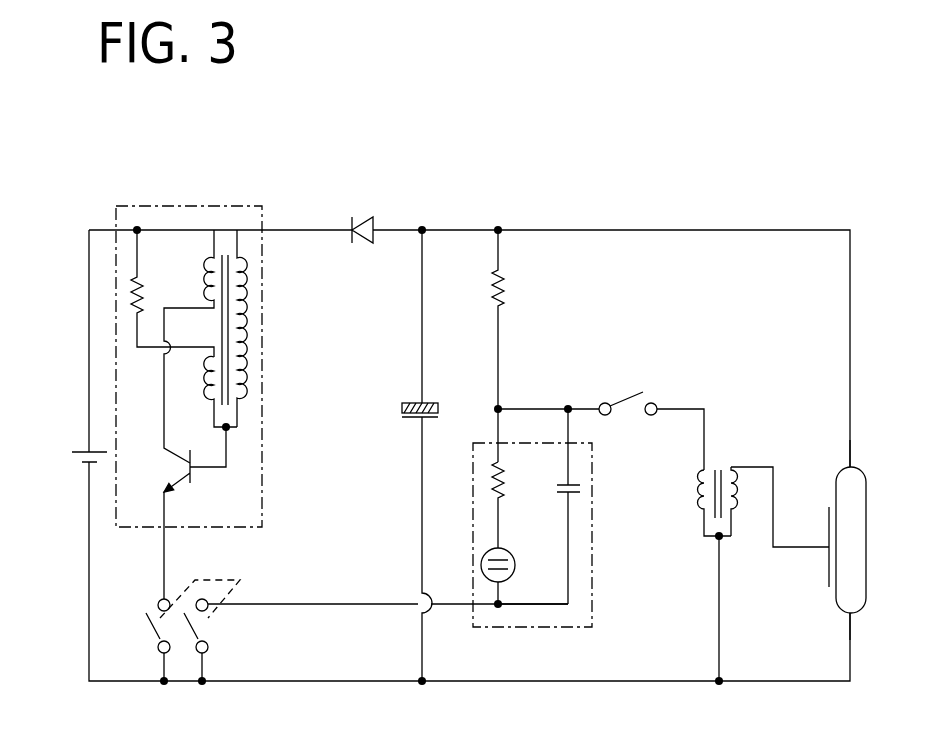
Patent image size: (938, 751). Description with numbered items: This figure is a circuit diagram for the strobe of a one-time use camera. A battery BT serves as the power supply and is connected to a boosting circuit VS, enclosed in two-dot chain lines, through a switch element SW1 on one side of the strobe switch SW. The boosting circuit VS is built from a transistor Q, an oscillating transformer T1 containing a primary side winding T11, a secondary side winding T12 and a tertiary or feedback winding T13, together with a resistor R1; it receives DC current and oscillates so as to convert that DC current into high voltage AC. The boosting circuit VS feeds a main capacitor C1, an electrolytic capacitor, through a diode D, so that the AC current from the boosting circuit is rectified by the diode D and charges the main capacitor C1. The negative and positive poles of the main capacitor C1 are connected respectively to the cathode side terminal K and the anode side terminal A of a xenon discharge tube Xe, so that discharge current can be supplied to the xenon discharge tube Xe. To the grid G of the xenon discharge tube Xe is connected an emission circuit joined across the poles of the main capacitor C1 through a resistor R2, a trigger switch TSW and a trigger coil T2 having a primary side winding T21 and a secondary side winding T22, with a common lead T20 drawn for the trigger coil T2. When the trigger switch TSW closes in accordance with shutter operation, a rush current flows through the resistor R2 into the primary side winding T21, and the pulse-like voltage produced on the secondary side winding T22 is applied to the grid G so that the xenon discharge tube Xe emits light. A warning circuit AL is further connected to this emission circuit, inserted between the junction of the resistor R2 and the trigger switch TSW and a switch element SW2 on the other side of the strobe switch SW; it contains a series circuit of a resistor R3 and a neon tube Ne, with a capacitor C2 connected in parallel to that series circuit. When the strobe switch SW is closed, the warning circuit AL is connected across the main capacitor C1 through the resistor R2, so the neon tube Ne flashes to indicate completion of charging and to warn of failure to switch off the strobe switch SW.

The battery BT is at (67, 455).
The boosting circuit VS is at (262, 303).
The resistor R1 is at (172, 293).
The oscillating transformer T1 is at (248, 308).
The primary side winding T11 is at (186, 346).
The secondary side winding T12 is at (252, 349).
The feedback winding T13 is at (202, 392).
The transistor Q is at (195, 513).
The diode D is at (362, 214).
The main capacitor C1 is at (418, 455).
The strobe switch SW is at (333, 604).
The switch element SW1 is at (134, 640).
The switch element SW2 is at (376, 640).
The resistor R2 is at (518, 346).
The trigger switch TSW is at (601, 415).
The warning circuit AL is at (565, 518).
The resistor R3 is at (517, 505).
The neon tube Ne is at (524, 576).
The capacitor C2 is at (576, 493).
The trigger coil T2 is at (739, 531).
The primary side winding T21 is at (690, 503).
The secondary side winding T22 is at (745, 490).
The common lead of T2 T20 is at (720, 633).
The xenon discharge tube Xe is at (852, 542).
The cathode side terminal K is at (862, 454).
The grid G is at (817, 547).
The anode side terminal A is at (862, 628).